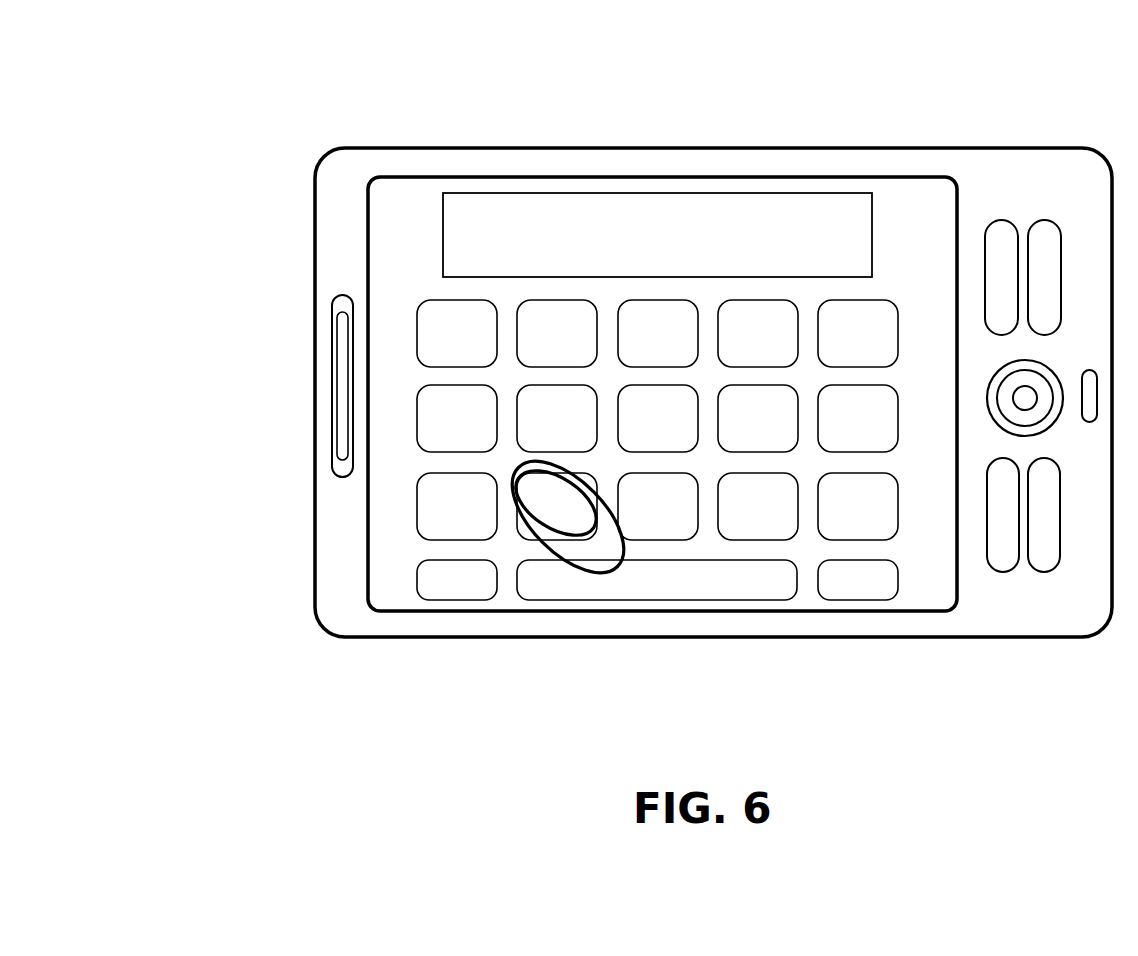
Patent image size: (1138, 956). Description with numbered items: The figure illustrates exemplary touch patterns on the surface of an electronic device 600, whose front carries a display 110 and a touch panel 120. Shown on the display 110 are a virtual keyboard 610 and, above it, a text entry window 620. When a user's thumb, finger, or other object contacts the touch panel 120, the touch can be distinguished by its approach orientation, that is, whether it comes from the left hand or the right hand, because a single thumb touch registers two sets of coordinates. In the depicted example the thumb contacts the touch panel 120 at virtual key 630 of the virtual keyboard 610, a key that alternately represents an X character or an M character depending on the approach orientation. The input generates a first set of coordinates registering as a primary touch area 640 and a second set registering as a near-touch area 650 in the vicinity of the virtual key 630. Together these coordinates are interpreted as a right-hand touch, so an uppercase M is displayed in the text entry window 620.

The electronic device 600 is at (325, 58).
The display 110 is at (614, 168).
The touch panel 120 is at (901, 177).
The virtual keyboard 610 is at (926, 568).
The text entry window 620 is at (443, 228).
The virtual key 630 is at (517, 543).
The primary touch area 640 is at (567, 537).
The near-touch area 650 is at (620, 543).